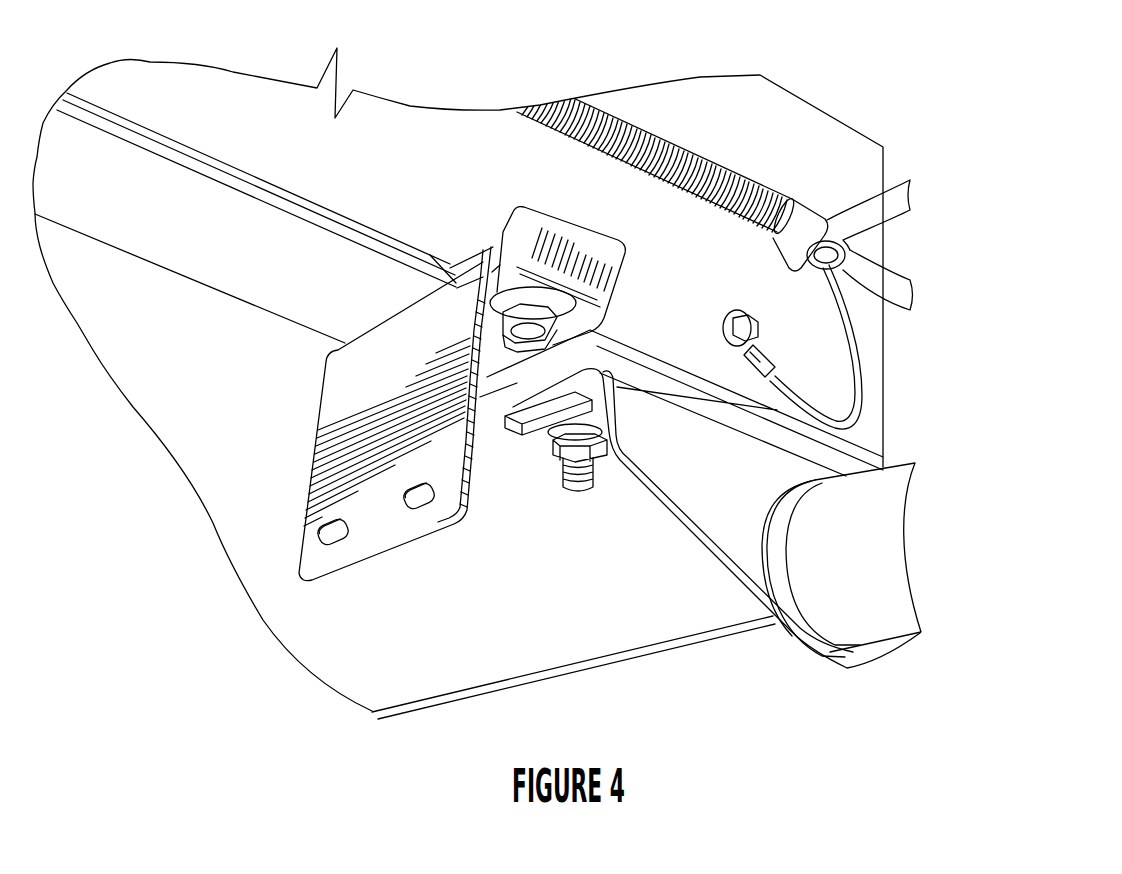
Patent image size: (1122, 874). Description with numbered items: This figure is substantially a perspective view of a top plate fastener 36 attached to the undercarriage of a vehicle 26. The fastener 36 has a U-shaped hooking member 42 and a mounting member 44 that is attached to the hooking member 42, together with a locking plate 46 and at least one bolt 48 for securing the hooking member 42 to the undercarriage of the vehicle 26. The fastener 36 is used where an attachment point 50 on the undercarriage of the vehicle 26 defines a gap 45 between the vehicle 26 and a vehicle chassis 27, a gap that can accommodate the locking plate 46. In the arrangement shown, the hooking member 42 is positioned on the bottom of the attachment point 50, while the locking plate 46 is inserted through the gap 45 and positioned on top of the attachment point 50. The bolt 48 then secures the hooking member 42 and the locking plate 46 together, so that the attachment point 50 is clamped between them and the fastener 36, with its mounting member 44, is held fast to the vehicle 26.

The vehicle 26 is at (390, 177).
The vehicle chassis 27 is at (322, 284).
The fastener 36 is at (630, 243).
The hooking member 42 is at (600, 288).
The mounting member 44 is at (447, 507).
The gap 45 is at (355, 222).
The locking plate 46 is at (432, 250).
The bolt 48 is at (530, 335).
The attachment point 50 is at (489, 258).